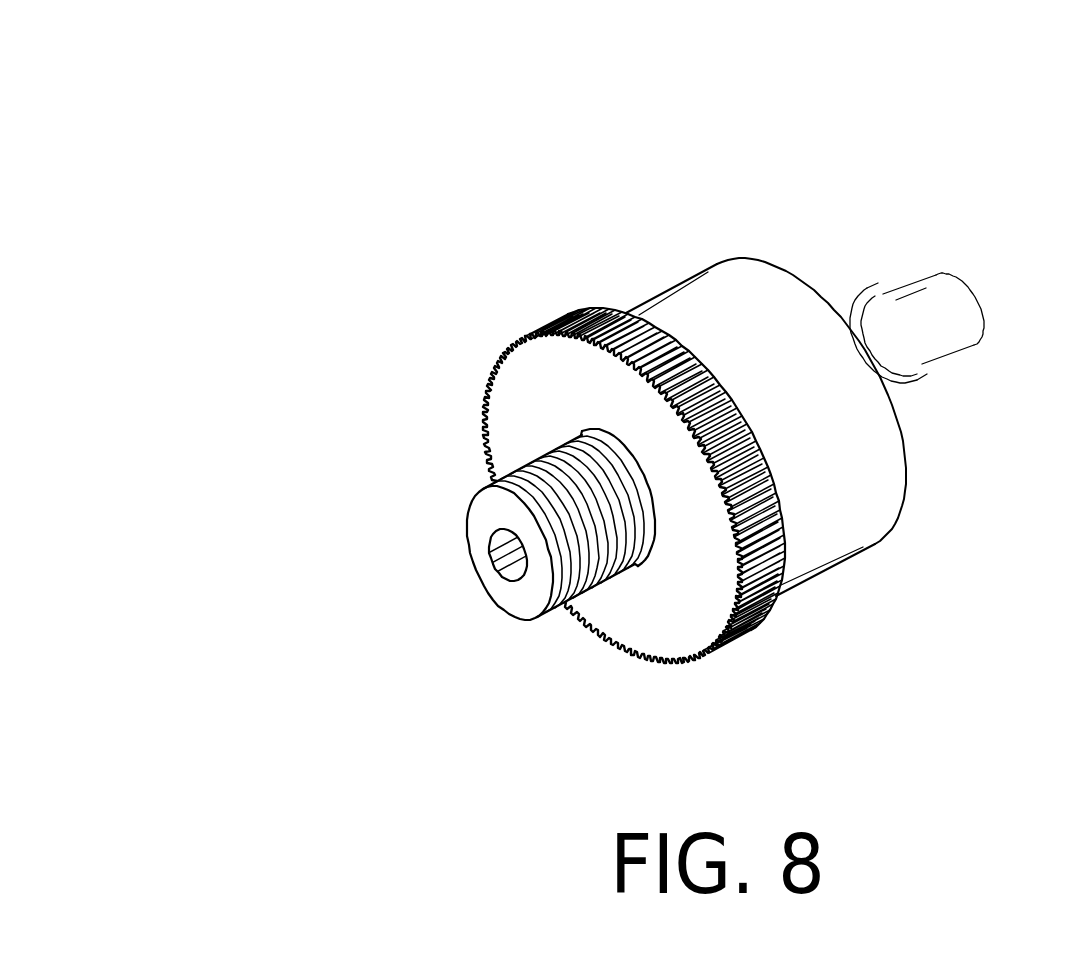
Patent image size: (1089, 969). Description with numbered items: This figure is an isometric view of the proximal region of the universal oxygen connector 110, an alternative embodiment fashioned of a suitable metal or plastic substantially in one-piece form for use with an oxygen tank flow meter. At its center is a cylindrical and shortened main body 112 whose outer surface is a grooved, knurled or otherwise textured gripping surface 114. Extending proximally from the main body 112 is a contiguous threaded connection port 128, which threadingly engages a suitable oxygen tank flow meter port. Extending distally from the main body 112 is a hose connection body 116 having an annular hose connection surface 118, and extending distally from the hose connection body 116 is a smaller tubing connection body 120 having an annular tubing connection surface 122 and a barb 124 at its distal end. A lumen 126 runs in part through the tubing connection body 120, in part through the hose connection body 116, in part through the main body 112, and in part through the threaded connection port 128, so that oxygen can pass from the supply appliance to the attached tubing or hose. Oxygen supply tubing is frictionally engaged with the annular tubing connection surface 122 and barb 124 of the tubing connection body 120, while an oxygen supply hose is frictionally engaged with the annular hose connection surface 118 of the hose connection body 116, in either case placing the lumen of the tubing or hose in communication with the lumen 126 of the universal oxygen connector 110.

The universal oxygen connector 110 is at (350, 210).
The main body 112 is at (523, 393).
The gripping surface 114 is at (757, 630).
The hose connection body 116 is at (650, 301).
The annular hose connection surface 118 is at (817, 510).
The tubing connection body 120 is at (853, 317).
The annular tubing connection surface 122 is at (893, 360).
The barb 124 is at (947, 327).
The lumen 126 is at (510, 555).
The threaded connection port 128 is at (527, 603).